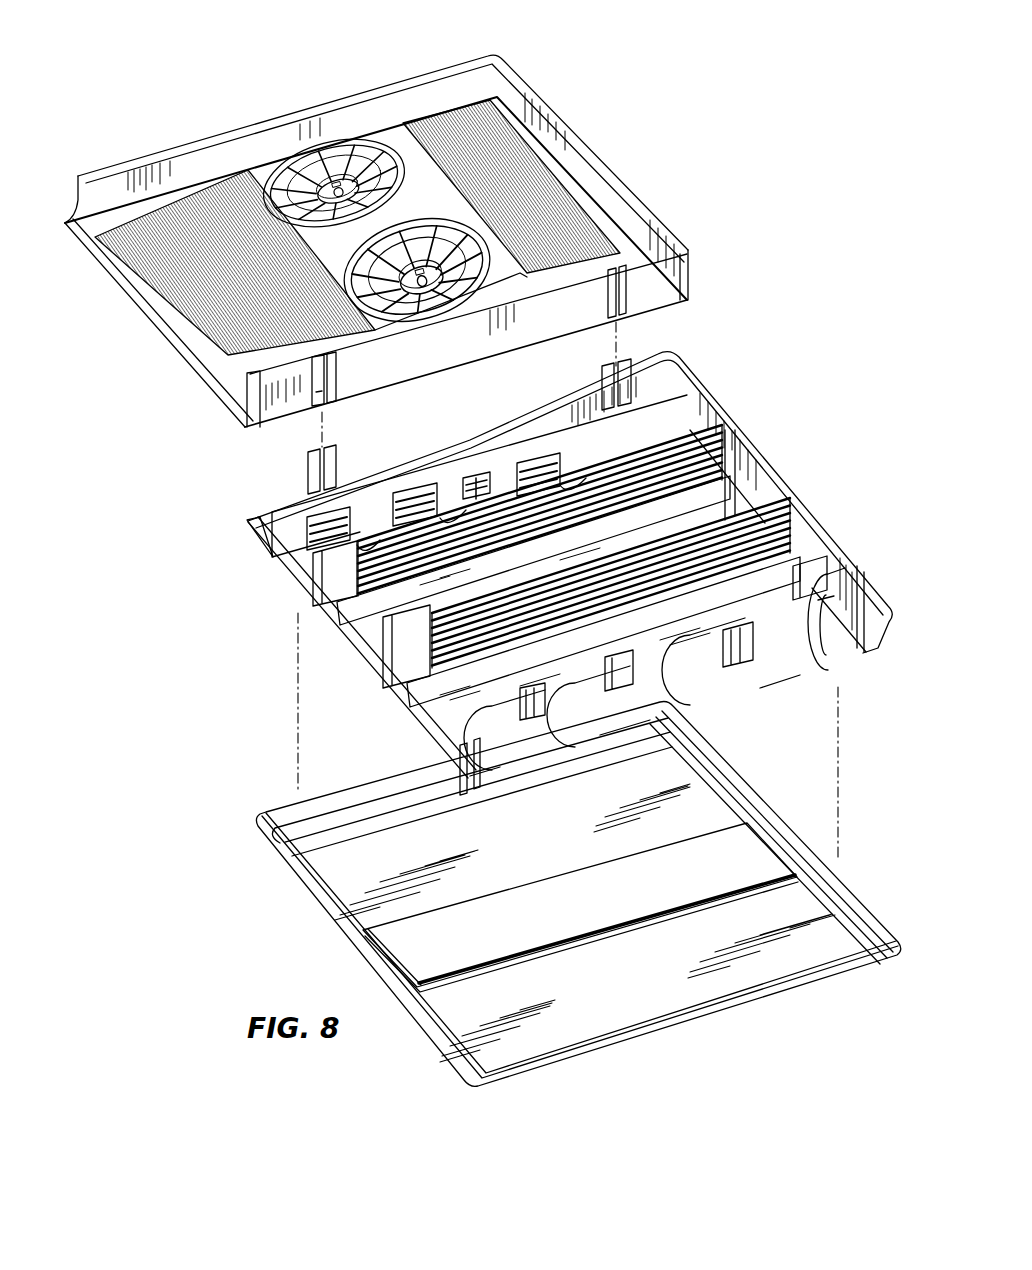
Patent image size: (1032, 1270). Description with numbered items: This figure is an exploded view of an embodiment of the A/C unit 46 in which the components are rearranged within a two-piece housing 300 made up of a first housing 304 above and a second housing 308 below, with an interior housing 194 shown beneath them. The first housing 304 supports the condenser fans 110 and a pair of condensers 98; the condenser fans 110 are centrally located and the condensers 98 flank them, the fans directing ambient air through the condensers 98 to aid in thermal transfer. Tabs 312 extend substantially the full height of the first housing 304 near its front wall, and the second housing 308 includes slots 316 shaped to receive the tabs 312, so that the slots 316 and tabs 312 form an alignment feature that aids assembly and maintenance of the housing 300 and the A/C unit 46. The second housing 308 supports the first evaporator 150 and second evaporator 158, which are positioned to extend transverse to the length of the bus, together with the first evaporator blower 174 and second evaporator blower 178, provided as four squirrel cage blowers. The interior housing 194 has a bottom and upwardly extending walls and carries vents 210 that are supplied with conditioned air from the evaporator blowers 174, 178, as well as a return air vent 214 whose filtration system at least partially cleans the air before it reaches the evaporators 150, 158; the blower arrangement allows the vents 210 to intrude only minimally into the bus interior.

The A/C unit 46 is at (742, 80).
The condenser 98 is at (495, 152).
The condenser fan 110 is at (407, 254).
The first housing 304 is at (593, 169).
The two-piece housing 300 is at (748, 216).
The tab 312 is at (336, 375).
The slot 316 is at (626, 370).
The second housing 308 is at (730, 408).
The first evaporator 150 is at (745, 498).
The second evaporator 158 is at (807, 585).
The first evaporator blower 174 is at (345, 548).
The second evaporator blower 178 is at (792, 640).
The vent 210 is at (682, 708).
The return air vent 214 is at (502, 900).
The interior housing 194 is at (590, 1012).